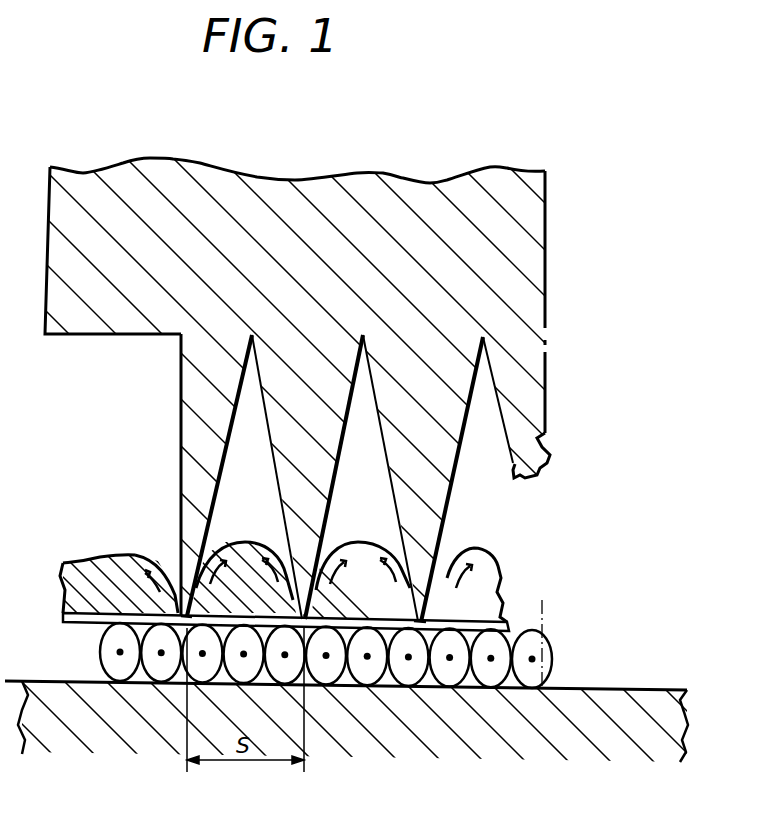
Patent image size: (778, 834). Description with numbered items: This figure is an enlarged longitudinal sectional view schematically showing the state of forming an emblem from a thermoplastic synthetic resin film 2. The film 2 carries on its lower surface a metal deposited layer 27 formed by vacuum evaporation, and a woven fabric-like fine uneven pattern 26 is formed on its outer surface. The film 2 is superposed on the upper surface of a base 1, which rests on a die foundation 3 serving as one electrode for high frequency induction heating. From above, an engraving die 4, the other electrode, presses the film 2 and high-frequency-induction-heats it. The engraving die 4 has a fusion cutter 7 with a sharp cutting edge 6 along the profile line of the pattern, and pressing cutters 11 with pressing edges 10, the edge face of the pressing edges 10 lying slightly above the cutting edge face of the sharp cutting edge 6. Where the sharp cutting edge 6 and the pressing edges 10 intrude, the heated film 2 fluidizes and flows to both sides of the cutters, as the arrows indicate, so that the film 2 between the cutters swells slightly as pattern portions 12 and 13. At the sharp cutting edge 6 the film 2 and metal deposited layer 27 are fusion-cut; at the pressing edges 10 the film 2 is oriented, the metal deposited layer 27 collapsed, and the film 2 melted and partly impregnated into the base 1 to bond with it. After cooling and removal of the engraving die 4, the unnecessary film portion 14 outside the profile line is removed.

The base 1 is at (532, 642).
The thermoplastic synthetic resin film 2 is at (63, 596).
The die foundation 3 is at (606, 700).
The engraving die 4 is at (507, 190).
The sharp cutting edge 6 is at (186, 624).
The fusion cutter 7 is at (200, 444).
The pressing edge 10 is at (420, 625).
The pressing cutter 11 is at (437, 452).
The pattern portion 12 is at (244, 542).
The pattern portion 13 is at (362, 542).
The unnecessary film portion 14 is at (103, 562).
The woven fabric-like fine uneven pattern 26 is at (470, 550).
The metal deposited layer 27 is at (507, 618).